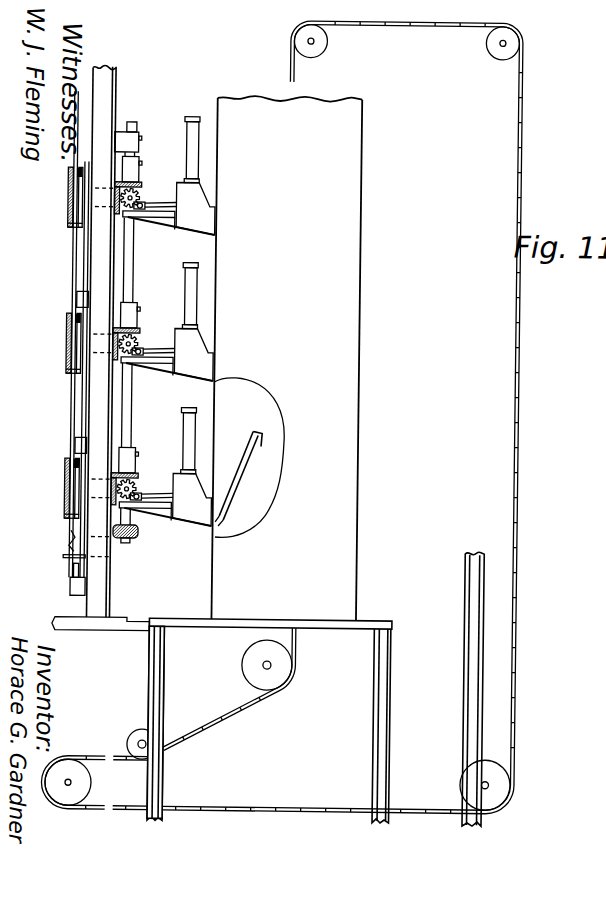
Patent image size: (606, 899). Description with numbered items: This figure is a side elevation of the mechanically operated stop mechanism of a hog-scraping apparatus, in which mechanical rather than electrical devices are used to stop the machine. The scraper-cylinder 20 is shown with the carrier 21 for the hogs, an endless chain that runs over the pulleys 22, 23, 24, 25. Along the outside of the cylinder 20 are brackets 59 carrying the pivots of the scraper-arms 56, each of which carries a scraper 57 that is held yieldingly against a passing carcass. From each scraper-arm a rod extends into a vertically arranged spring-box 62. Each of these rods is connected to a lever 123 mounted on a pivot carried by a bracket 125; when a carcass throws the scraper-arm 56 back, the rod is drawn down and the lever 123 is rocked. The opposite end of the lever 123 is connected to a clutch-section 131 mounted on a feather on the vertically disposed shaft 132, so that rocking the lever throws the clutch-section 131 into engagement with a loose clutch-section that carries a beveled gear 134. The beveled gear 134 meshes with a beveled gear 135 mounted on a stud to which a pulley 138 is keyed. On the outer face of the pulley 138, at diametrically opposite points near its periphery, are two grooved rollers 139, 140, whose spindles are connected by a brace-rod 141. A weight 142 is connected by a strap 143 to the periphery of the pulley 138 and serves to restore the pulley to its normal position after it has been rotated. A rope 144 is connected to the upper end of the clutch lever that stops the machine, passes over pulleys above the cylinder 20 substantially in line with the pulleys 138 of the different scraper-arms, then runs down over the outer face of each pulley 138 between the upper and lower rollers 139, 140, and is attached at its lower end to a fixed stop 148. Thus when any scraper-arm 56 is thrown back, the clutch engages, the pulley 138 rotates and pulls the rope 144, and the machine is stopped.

The scraper-cylinder 20 is at (214, 409).
The carrier 21 is at (392, 25).
The pulley 22 is at (87, 785).
The pulley 23 is at (134, 732).
The pulley 24 is at (255, 668).
The pulley 25 is at (320, 48).
The scraper-arm 56 is at (236, 479).
The scraper 57 is at (262, 440).
The bracket 59 is at (194, 353).
The spring-box 62 is at (186, 156).
The lever 123 is at (142, 207).
The bracket 125 is at (164, 224).
The clutch-section 131 is at (137, 199).
The shaft 132 is at (130, 124).
The beveled gear 134 is at (138, 184).
The beveled gear 135 is at (114, 218).
The pulley 138 is at (67, 203).
The grooved roller 139 is at (70, 228).
The grooved roller 140 is at (74, 175).
The brace-rod 141 is at (76, 187).
The weight 142 is at (75, 296).
The strap 143 is at (83, 258).
The rope 144 is at (70, 396).
The fixed stop 148 is at (69, 546).